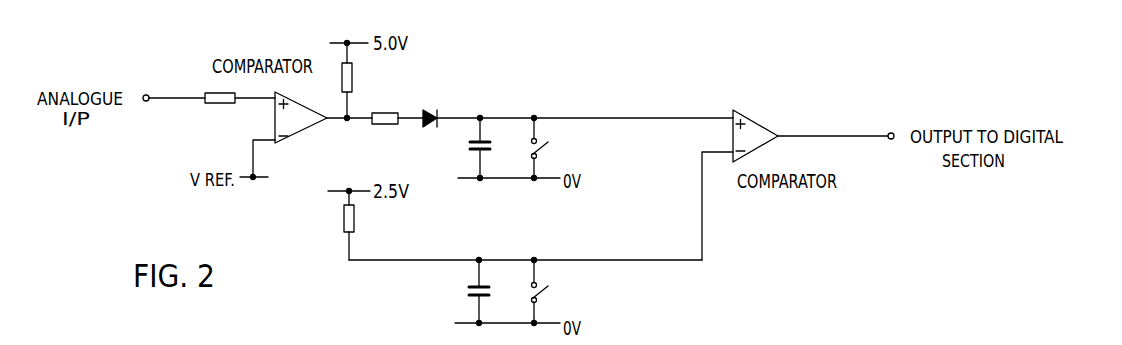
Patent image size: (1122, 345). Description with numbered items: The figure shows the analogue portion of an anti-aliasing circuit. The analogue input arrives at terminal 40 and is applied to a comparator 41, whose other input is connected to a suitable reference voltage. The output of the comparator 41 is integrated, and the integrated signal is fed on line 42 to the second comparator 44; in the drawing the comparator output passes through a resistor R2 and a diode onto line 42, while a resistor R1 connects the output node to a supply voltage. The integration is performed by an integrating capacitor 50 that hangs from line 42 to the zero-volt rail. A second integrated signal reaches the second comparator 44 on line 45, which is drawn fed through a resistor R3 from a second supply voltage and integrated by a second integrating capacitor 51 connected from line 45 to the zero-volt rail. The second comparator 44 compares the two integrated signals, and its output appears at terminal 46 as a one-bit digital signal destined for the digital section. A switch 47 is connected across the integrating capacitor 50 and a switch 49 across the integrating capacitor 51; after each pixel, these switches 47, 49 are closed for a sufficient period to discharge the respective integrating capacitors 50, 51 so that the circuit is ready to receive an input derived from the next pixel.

The terminal 40 is at (147, 95).
The comparator 41 is at (304, 124).
The line 42 is at (668, 116).
The second comparator 44 is at (756, 128).
The line 45 is at (640, 258).
The terminal 46 is at (891, 133).
The switch 47 is at (546, 153).
The switch 49 is at (546, 287).
The integrating capacitor 50 is at (470, 147).
The integrating capacitor 51 is at (471, 298).
The resistor R1 is at (352, 78).
The resistor R2 is at (391, 113).
The resistor R3 is at (354, 221).